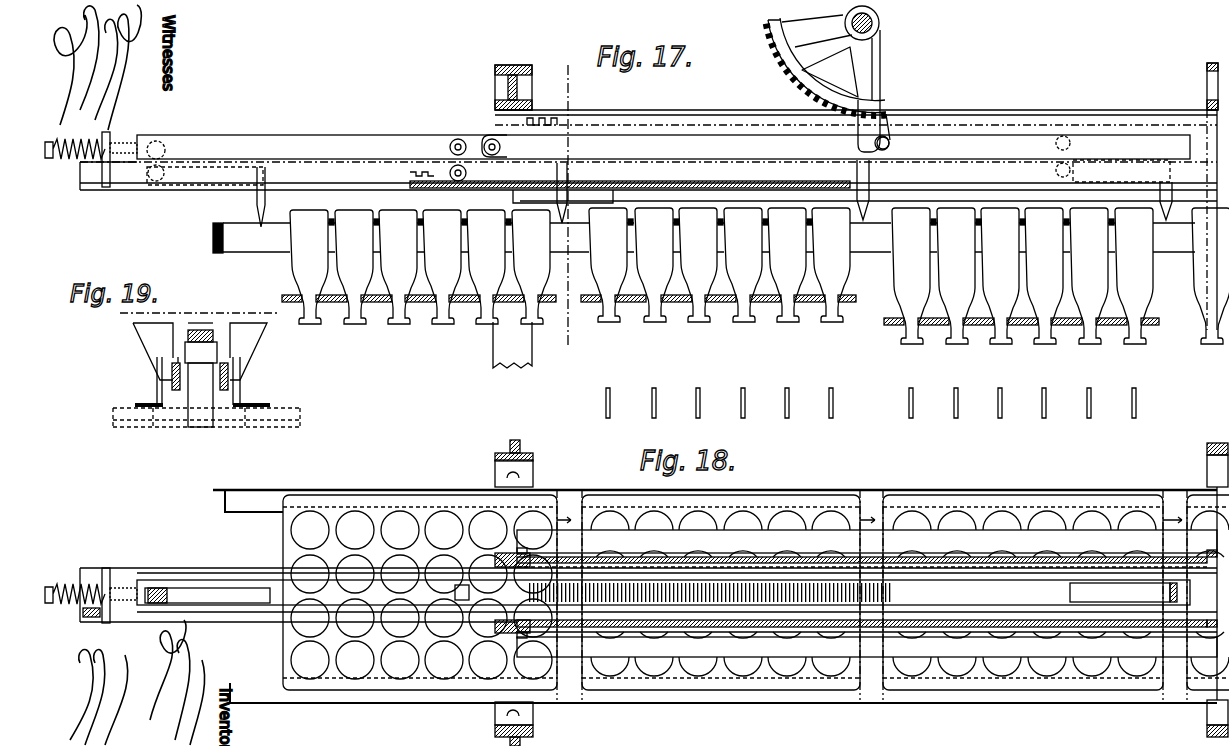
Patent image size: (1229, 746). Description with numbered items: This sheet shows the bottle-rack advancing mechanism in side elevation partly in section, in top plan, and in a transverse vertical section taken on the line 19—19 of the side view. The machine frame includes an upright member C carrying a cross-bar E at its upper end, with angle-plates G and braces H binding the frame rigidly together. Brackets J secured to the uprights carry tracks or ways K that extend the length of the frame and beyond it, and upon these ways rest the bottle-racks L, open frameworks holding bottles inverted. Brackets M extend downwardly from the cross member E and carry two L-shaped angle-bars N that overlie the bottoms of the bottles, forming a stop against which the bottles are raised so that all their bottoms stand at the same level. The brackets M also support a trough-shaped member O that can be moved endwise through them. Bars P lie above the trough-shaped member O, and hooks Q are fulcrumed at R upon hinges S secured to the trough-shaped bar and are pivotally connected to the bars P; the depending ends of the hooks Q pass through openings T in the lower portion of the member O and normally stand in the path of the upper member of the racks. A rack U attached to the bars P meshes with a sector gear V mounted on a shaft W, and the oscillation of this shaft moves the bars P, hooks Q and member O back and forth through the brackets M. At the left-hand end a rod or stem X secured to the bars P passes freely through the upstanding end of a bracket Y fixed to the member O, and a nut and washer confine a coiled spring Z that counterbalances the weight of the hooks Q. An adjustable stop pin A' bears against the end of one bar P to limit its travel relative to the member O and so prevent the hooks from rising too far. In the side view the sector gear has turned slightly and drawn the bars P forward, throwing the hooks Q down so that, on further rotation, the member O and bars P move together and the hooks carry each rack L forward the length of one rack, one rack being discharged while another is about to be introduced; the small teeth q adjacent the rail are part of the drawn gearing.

In FIG. 17, the cross-bar E is at (518, 65).
In FIG. 17, the angle-plate G is at (648, 116).
In FIG. 17, the rack teeth q is at (686, 126).
In FIG. 17, the sector gear V is at (770, 68).
In FIG. 17, the shaft W is at (880, 20).
In FIG. 17, the upright member C is at (1207, 74).
In FIG. 18, the upright member C is at (1207, 452).
In FIG. 17, the bar P is at (340, 140).
In FIG. 19, the bar P is at (170, 370).
In FIG. 17, the fulcrum R is at (452, 160).
In FIG. 18, the fulcrum R is at (348, 595).
In FIG. 17, the hook Q is at (443, 167).
In FIG. 19, the hook Q is at (201, 384).
In FIG. 18, the hook Q is at (212, 588).
In FIG. 17, the opening T is at (570, 178).
In FIG. 18, the opening T is at (270, 597).
In FIG. 17, the hinge S is at (400, 183).
In FIG. 17, the trough-shaped member O is at (160, 190).
In FIG. 19, the trough-shaped member O is at (180, 395).
In FIG. 17, the L-shaped angle-bar N is at (510, 200).
In FIG. 19, the L-shaped angle-bar N is at (150, 388).
In FIG. 18, the L-shaped angle-bar N is at (867, 593).
In FIG. 17, the bottle-rack L is at (285, 224).
In FIG. 18, the bottle-rack L is at (610, 492).
In FIG. 17, the track K is at (213, 237).
In FIG. 18, the track K is at (545, 478).
In FIG. 17, the brace H is at (530, 345).
In FIG. 17, the bracket Y is at (112, 140).
In FIG. 18, the bracket Y is at (104, 570).
In FIG. 17, the rod or stem X is at (147, 163).
In FIG. 18, the rod or stem X is at (125, 593).
In FIG. 17, the coiled spring Z is at (72, 160).
In FIG. 18, the coiled spring Z is at (70, 585).
In FIG. 17, the adjustable stop pin A' is at (111, 189).
In FIG. 18, the adjustable stop pin A' is at (300, 550).
In FIG. 19, the rack U is at (205, 328).
In FIG. 18, the rack U is at (730, 583).
In FIG. 18, the bracket J is at (495, 480).
In FIG. 19, the bracket M is at (135, 348).
In FIG. 18, the bracket M is at (500, 555).
In FIG. 17, the section line 19 is at (574, 201).